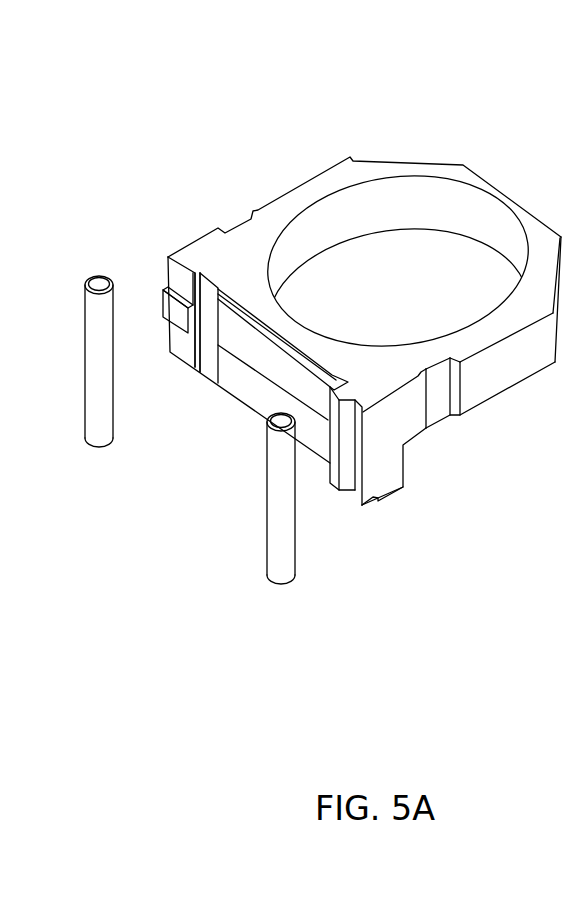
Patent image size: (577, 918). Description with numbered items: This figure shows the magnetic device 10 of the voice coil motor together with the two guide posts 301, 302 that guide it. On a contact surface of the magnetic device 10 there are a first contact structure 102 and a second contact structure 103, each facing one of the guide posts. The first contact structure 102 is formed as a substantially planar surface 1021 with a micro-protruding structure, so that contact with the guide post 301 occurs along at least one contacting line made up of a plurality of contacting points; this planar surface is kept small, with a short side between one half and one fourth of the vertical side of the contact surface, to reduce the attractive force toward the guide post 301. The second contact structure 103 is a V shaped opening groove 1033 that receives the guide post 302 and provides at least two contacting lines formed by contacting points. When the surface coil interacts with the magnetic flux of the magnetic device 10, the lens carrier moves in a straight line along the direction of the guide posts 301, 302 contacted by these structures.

The magnetic device 10 is at (433, 175).
The substantially planar surface 1021 is at (163, 290).
The first contact structure 102 is at (175, 382).
The V shaped opening groove 1033 is at (352, 455).
The second contact structure 103 is at (350, 540).
The guide post 301 is at (92, 435).
The guide post 302 is at (278, 560).